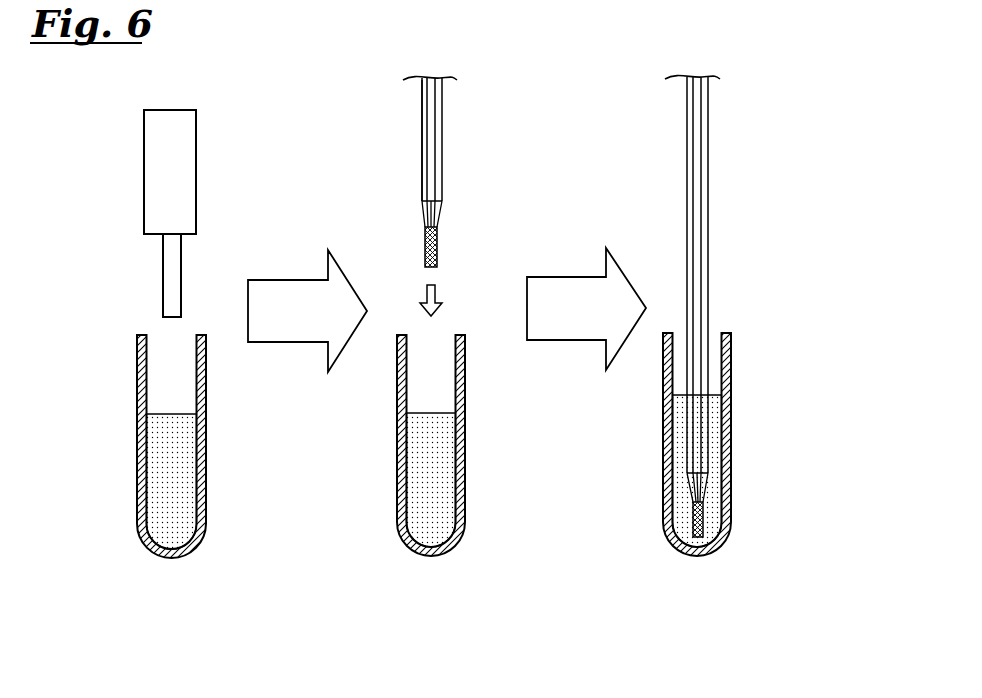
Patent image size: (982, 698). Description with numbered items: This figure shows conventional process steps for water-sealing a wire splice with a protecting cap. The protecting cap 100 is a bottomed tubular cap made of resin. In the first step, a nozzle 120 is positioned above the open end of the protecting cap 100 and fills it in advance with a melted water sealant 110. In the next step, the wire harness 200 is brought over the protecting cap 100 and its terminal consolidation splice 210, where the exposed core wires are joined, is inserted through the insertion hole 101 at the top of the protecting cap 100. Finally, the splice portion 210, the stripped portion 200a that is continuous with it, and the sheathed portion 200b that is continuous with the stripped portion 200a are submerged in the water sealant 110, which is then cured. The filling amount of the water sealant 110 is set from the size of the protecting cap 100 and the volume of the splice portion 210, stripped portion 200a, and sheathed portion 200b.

The protecting cap 100 is at (137, 382).
The insertion hole 101 is at (438, 334).
The water sealant 110 is at (165, 465).
The nozzle 120 is at (144, 192).
The wire harness 200 is at (447, 152).
The stripped portion 200a is at (437, 213).
The sheathed portion 200b is at (423, 150).
The terminal consolidation splice 210 is at (437, 245).